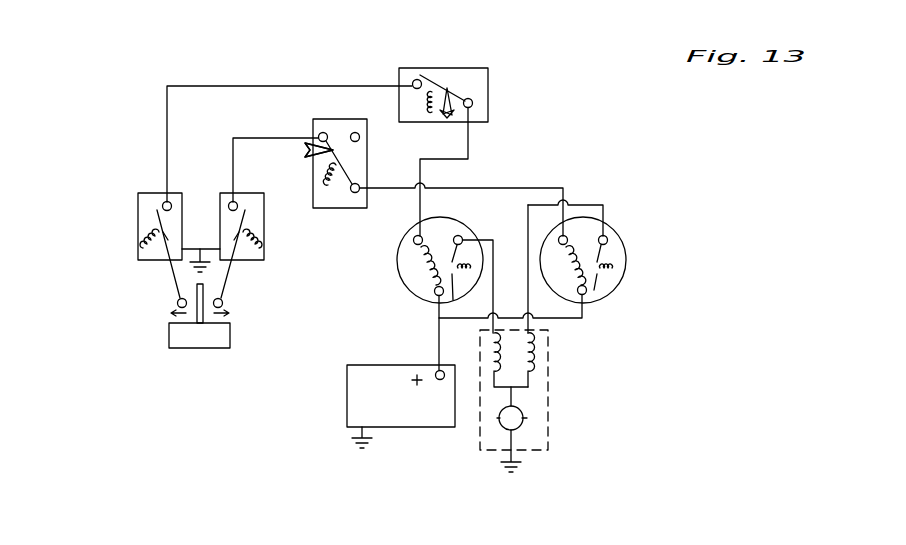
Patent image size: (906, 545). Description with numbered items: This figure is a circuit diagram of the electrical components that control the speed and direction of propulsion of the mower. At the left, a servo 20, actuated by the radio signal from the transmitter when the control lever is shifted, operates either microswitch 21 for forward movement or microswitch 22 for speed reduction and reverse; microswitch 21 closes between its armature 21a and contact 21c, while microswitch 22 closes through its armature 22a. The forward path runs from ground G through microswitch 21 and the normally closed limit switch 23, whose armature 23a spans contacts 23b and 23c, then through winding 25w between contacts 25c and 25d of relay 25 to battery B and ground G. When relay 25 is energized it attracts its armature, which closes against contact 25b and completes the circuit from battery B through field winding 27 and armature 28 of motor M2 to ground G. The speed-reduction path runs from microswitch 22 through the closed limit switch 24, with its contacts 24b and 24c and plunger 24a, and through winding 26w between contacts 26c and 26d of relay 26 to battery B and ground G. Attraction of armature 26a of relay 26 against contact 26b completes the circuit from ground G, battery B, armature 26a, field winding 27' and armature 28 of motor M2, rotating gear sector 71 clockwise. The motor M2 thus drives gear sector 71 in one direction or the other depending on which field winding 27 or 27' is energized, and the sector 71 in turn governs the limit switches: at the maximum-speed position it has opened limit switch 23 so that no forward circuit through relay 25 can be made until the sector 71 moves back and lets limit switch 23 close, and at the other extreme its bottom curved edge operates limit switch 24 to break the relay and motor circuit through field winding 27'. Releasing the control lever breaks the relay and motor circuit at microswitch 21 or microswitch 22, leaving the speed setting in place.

The servo 20 is at (196, 340).
The microswitch 21 is at (125, 223).
The armature of microswitch 21 21a is at (157, 274).
The contact of microswitch 21 21c is at (163, 200).
The microswitch 22 is at (264, 245).
The armature of microswitch 22 22a is at (240, 275).
The limit switch 23 is at (463, 70).
The armature of limit switch 23 23a is at (434, 78).
The contact of limit switch 23 23b is at (473, 105).
The contact of limit switch 23 23c is at (417, 79).
The limit switch 24 is at (330, 130).
The plunger of limit switch 24 24a is at (312, 160).
The contact of limit switch 24 24b is at (360, 187).
The contact of limit switch 24 24c is at (324, 132).
The relay 25 is at (417, 282).
The contact of relay 25 25b is at (461, 236).
The contact of relay 25 25c is at (413, 241).
The contact of relay 25 25d is at (435, 285).
The winding of relay 25 25w is at (426, 268).
The relay 26 is at (584, 252).
The armature of relay 26 26a is at (606, 268).
The contact of relay 26 26b is at (605, 235).
The contact of relay 26 26c is at (564, 235).
The contact of relay 26 26d is at (588, 294).
The winding of relay 26 26w is at (560, 258).
The field winding 27 is at (484, 405).
The field winding 27' is at (558, 360).
The armature of motor M2 28 is at (528, 418).
The gear sector 71 is at (308, 146).
The battery B is at (355, 406).
The ground G is at (199, 249).
The motor M2 is at (516, 404).